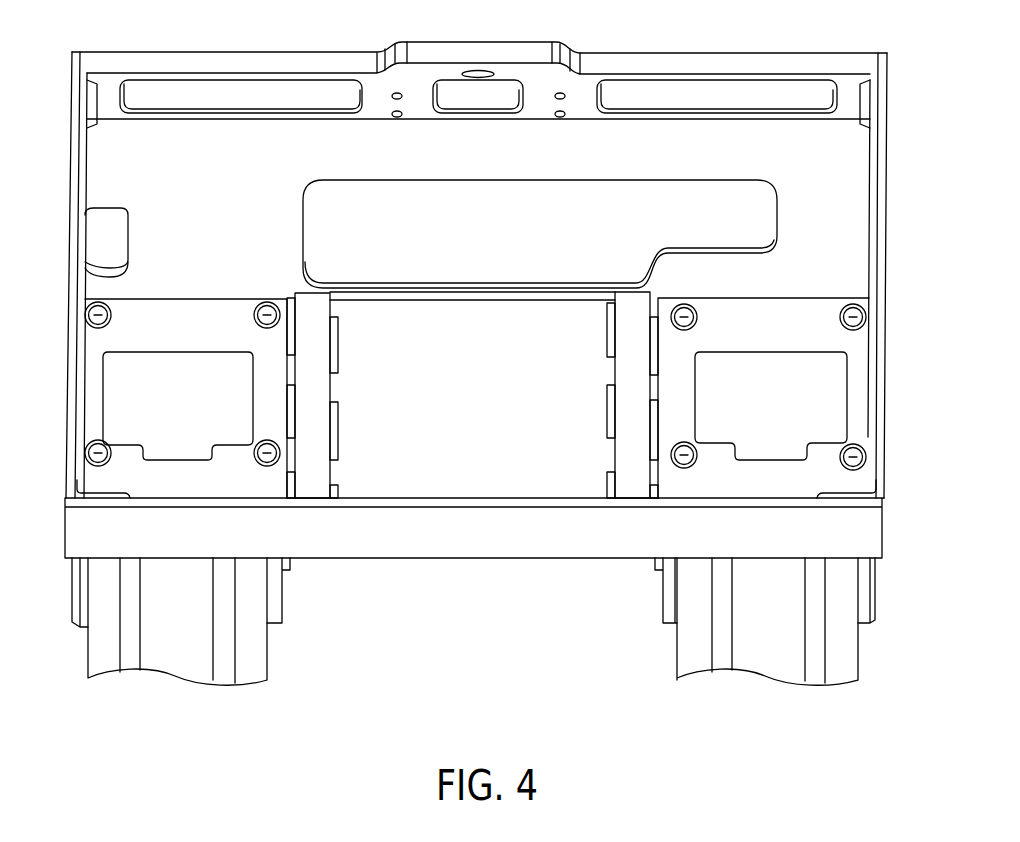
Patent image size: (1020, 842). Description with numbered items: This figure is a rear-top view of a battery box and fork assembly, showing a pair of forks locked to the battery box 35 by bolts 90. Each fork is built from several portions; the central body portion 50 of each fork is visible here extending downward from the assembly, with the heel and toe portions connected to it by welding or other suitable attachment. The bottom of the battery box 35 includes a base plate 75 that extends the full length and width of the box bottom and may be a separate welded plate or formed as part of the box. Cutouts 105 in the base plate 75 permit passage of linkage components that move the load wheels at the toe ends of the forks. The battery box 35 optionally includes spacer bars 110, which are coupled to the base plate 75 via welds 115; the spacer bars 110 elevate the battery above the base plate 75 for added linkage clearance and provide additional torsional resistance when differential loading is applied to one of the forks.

The battery box 35 is at (470, 547).
The central body portion 50 is at (170, 660).
The base plate 75 is at (420, 308).
The bolts 90 is at (88, 318).
The cutouts 105 is at (170, 352).
The spacer bars 110 is at (312, 302).
The welds 115 is at (287, 338).